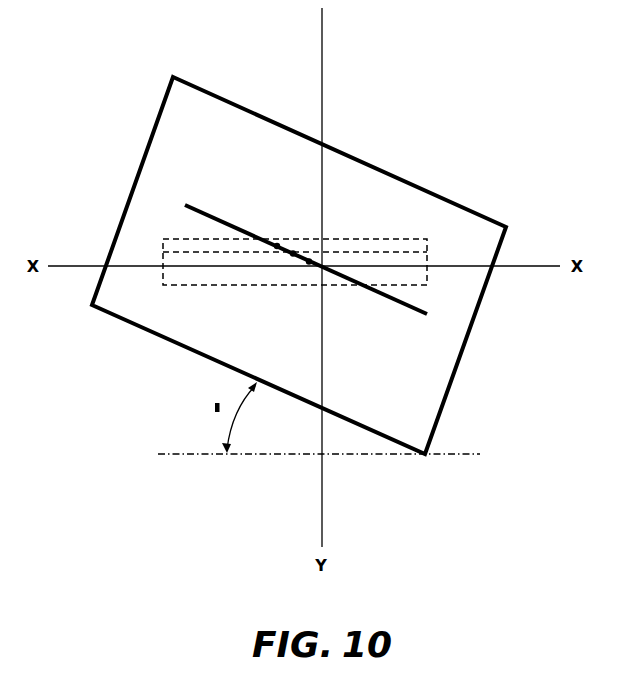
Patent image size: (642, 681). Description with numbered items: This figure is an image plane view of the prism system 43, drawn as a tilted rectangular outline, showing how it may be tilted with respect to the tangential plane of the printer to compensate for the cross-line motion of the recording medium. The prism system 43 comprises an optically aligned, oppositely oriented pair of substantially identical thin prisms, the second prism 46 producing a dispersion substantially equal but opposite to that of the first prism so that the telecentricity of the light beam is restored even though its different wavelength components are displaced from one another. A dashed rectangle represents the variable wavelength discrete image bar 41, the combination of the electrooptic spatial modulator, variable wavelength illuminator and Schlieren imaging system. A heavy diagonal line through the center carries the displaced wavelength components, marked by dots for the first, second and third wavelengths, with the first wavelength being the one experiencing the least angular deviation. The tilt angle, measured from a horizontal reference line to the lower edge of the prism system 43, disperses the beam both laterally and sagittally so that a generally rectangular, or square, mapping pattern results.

The prism system 43 is at (250, 104).
The second prism 46 is at (160, 158).
The variable wavelength discrete image bar 41 is at (390, 236).